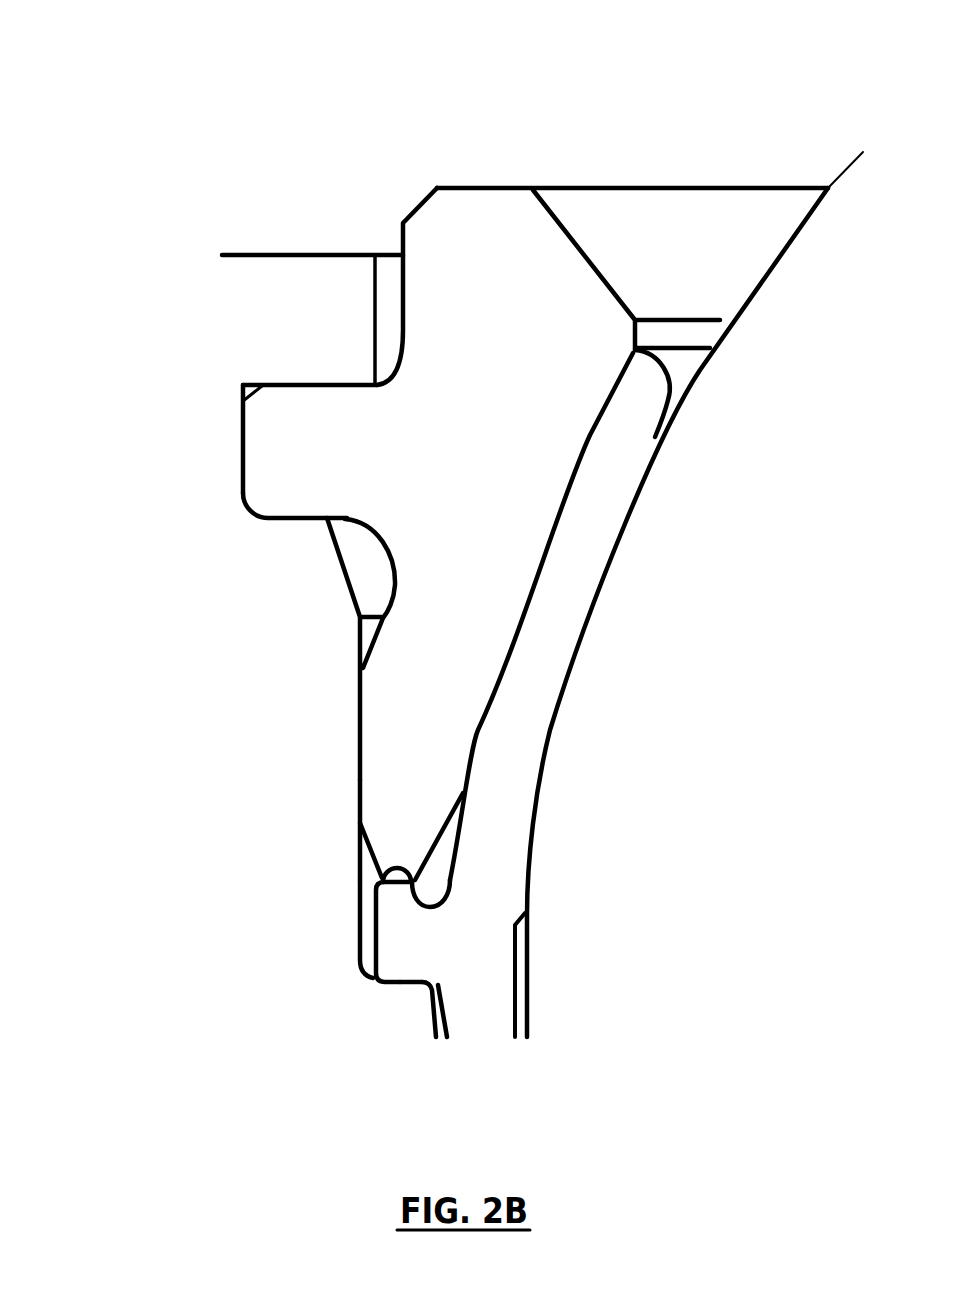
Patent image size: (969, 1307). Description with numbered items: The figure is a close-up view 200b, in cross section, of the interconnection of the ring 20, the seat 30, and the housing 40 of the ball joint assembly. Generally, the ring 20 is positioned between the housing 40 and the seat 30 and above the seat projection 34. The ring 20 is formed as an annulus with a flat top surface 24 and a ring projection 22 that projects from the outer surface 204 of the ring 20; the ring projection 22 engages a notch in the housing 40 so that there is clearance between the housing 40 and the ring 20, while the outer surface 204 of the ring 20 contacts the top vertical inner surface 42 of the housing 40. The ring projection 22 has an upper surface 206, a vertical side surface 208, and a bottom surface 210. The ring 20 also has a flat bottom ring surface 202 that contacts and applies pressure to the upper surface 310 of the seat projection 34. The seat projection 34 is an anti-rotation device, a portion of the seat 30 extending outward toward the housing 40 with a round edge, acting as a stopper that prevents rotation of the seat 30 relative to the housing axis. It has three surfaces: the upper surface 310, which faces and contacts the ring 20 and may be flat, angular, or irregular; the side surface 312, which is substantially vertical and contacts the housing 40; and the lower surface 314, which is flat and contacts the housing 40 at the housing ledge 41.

The close-up view 200b is at (148, 63).
The ring 20 is at (433, 247).
The ring projection 22 is at (273, 457).
The flat top surface 24 is at (483, 186).
The seat 30 is at (558, 618).
The seat projection 34 is at (385, 943).
The housing 40 is at (307, 297).
The housing ledge 41 is at (398, 985).
The top vertical inner surface 42 is at (362, 866).
The bottom ring surface 202 is at (395, 886).
The outer surface 204 is at (353, 678).
The upper surface 206 is at (297, 382).
The vertical side surface 208 is at (243, 425).
The bottom surface 210 is at (297, 530).
The upper surface 310 is at (393, 867).
The side surface 312 is at (363, 900).
The lower surface 314 is at (417, 972).